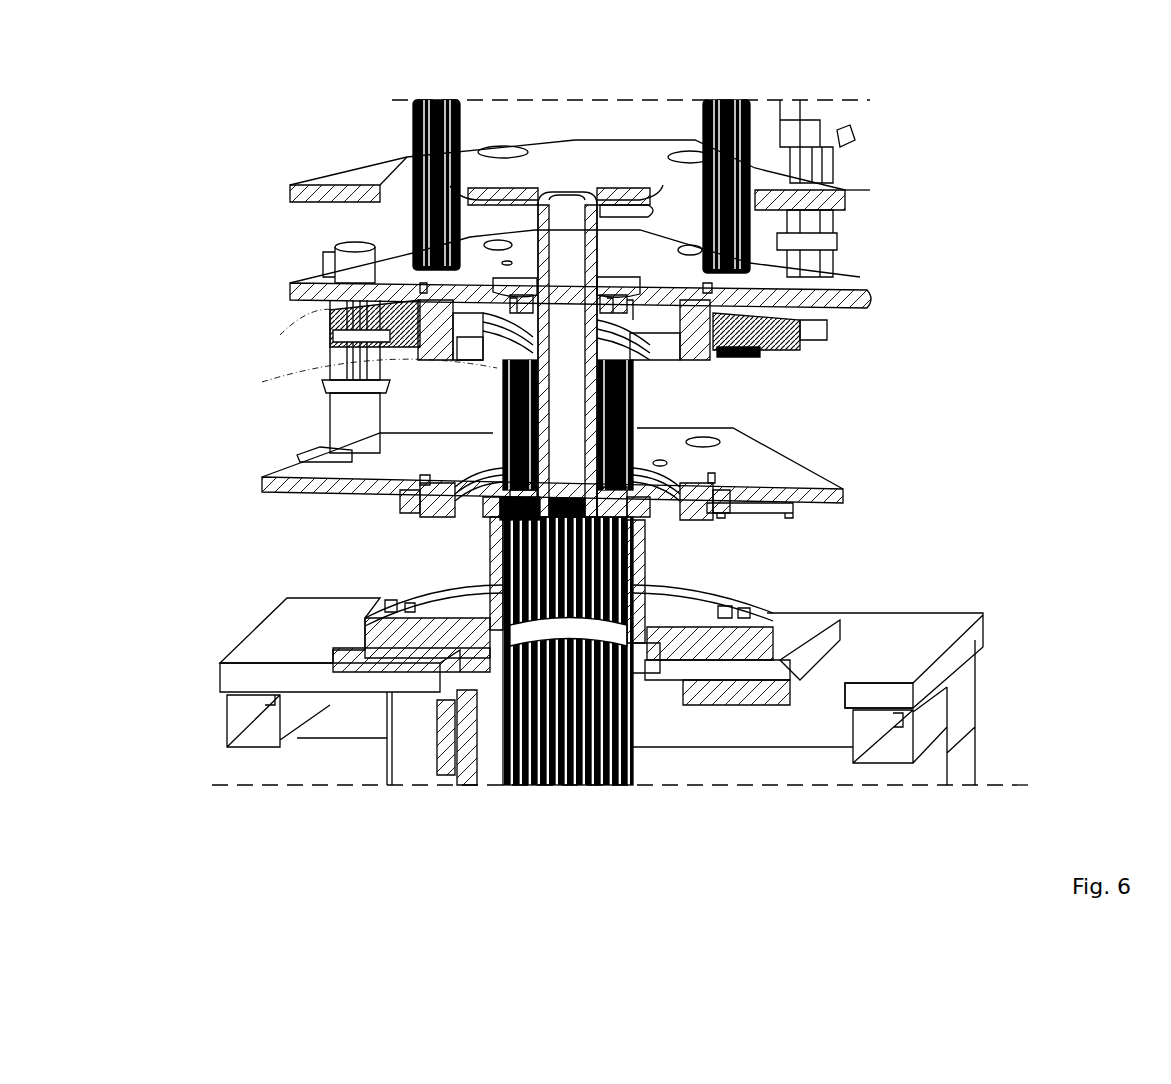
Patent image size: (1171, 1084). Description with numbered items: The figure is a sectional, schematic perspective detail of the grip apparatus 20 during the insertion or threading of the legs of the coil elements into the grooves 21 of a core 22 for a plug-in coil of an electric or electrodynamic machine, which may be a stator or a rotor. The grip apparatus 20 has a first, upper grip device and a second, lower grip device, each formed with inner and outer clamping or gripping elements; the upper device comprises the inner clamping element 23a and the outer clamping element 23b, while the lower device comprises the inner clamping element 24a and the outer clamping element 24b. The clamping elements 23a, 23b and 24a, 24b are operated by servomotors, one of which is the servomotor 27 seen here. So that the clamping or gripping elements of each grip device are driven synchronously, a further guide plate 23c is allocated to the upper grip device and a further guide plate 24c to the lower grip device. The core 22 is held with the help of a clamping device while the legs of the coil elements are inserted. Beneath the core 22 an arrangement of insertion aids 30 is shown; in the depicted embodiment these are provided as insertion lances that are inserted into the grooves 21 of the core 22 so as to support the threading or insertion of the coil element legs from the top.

The grip apparatus 20 is at (872, 288).
The grooves 21 is at (493, 543).
The core 22 is at (640, 550).
The inner clamping element 23a is at (333, 362).
The outer clamping element 23b is at (668, 358).
The guide plate 23c is at (793, 357).
The inner clamping element 24a is at (467, 513).
The outer clamping element 24b is at (687, 480).
The guide plate 24c is at (790, 487).
The servomotor 27 is at (332, 306).
The insertion aids 30 is at (625, 788).